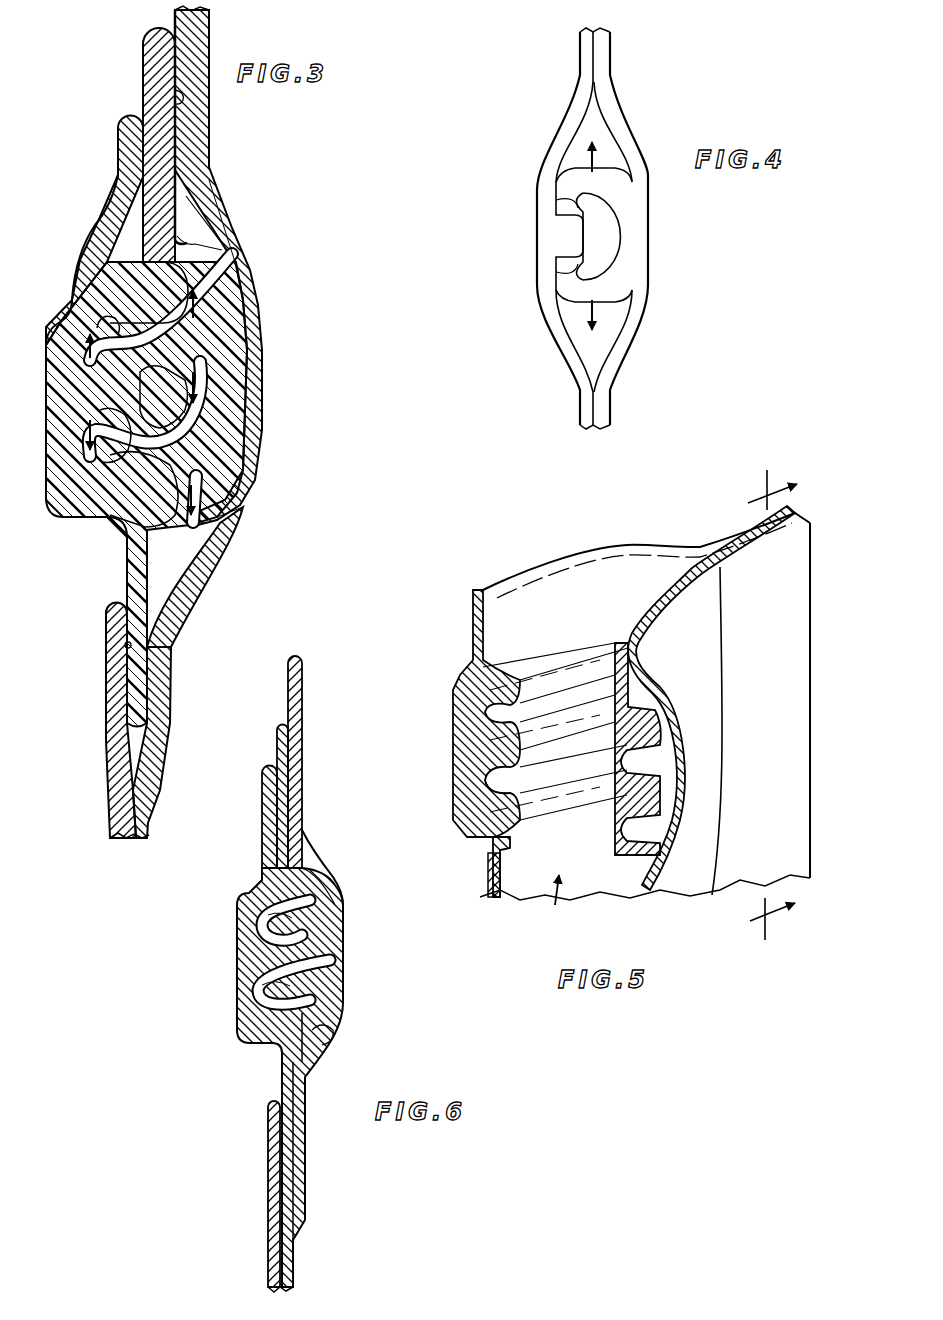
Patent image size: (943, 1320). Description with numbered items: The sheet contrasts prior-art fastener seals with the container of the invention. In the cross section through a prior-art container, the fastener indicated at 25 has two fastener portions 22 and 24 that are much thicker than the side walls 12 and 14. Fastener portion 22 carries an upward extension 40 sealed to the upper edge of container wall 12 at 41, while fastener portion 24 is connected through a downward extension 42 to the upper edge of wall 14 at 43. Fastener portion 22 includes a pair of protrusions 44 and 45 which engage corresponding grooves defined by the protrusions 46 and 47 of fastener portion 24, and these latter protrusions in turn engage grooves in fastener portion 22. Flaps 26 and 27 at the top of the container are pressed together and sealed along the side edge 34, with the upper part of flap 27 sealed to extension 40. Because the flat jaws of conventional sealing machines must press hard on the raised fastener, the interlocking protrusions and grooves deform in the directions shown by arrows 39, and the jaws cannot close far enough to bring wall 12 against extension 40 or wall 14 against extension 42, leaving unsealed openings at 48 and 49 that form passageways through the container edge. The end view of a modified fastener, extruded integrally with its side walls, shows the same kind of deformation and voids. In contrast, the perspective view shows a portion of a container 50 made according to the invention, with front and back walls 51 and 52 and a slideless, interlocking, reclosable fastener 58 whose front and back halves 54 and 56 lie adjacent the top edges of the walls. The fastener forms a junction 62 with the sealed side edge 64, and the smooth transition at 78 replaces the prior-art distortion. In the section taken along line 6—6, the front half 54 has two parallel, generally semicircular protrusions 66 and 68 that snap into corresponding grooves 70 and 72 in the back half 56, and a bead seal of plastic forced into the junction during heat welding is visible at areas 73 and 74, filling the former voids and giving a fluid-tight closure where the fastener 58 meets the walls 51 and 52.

In FIG. 3, the container side wall 12 is at (160, 712).
In FIG. 3, the container side wall 14 is at (110, 705).
In FIG. 3, the fastener portion 22 is at (190, 440).
In FIG. 3, the fastener portion 24 is at (80, 393).
In FIG. 3, the closure assembly 25 is at (84, 216).
In FIG. 3, the flap 26 is at (198, 20).
In FIG. 3, the flap 27 is at (130, 153).
In FIG. 3, the side edge 34 is at (178, 664).
In FIG. 3, the arrows 39 is at (197, 307).
In FIG. 3, the upward extension 40 is at (158, 45).
In FIG. 3, the seal point 41 is at (176, 96).
In FIG. 3, the downward extension 42 is at (133, 565).
In FIG. 3, the connection point 43 is at (245, 353).
In FIG. 3, the protrusion 44 is at (140, 312).
In FIG. 3, the protrusion 45 is at (97, 513).
In FIG. 3, the protrusion 46 is at (160, 292).
In FIG. 3, the protrusion 47 is at (163, 388).
In FIG. 3, the unsealed area 48 is at (183, 228).
In FIG. 3, the unsealed area 49 is at (178, 548).
In FIG. 5, the container 50 is at (548, 902).
In FIG. 5, the front wall 51 is at (681, 886).
In FIG. 6, the front wall 51 is at (300, 1142).
In FIG. 5, the back wall 52 is at (487, 866).
In FIG. 6, the back wall 52 is at (270, 1133).
In FIG. 5, the front half of fastener 54 is at (648, 770).
In FIG. 6, the front half of fastener 54 is at (305, 935).
In FIG. 5, the back half of fastener 56 is at (465, 755).
In FIG. 6, the back half of fastener 56 is at (262, 953).
In FIG. 5, the interlocking fastener 58 is at (456, 665).
In FIG. 6, the interlocking fastener 58 is at (250, 866).
In FIG. 5, the section line 6— 6 is at (771, 708).
In FIG. 5, the junction 62 is at (733, 660).
In FIG. 5, the side edge 64 is at (800, 625).
In FIG. 5, the protrusion 66 is at (618, 762).
In FIG. 6, the protrusion 66 is at (278, 924).
In FIG. 5, the protrusion 68 is at (622, 828).
In FIG. 6, the protrusion 68 is at (278, 995).
In FIG. 5, the groove 70 is at (497, 720).
In FIG. 5, the groove 72 is at (500, 788).
In FIG. 6, the bead seal area 73 is at (298, 857).
In FIG. 6, the bead seal area 74 is at (312, 1032).
In FIG. 5, the smooth transition area 78 is at (673, 562).